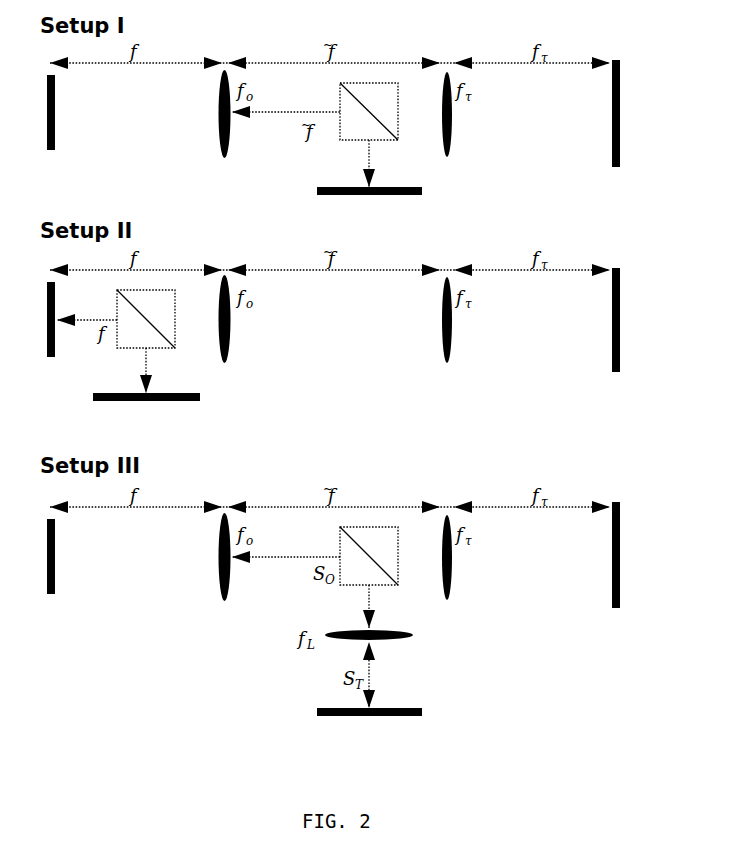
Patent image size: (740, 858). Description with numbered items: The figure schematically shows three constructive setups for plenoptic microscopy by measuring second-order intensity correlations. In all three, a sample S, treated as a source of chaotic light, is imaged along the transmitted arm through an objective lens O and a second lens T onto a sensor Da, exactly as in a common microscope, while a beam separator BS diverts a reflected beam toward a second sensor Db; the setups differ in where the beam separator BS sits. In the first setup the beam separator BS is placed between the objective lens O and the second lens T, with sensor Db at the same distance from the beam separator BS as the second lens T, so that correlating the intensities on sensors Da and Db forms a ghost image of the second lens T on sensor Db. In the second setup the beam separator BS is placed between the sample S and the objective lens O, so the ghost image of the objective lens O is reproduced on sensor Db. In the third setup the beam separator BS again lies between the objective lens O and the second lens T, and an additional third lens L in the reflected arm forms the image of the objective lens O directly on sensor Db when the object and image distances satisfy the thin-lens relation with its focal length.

The sample S is at (51, 318).
The objective lens O is at (224, 322).
The second lens T is at (447, 321).
The beam separator BS is at (271, 334).
The sensor Da is at (630, 334).
The sensor Db is at (274, 451).
The third lens L is at (378, 636).